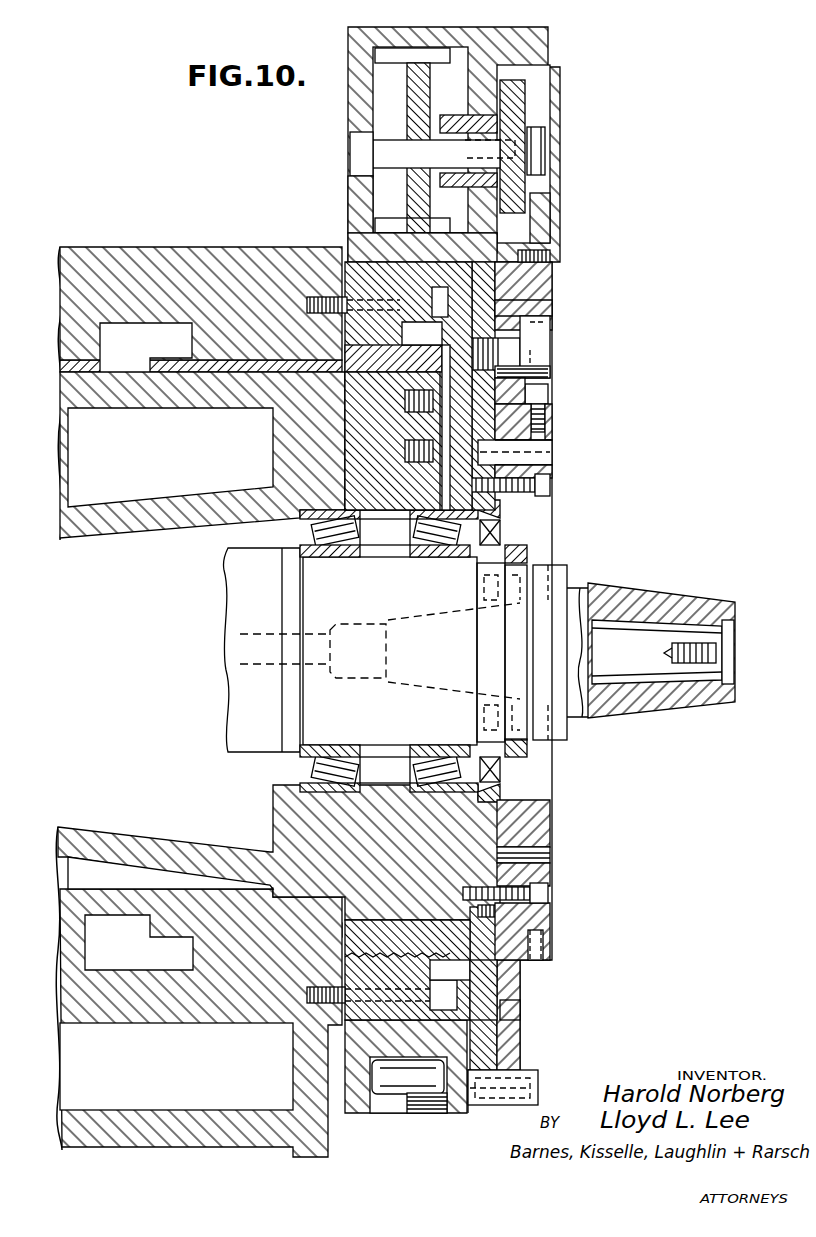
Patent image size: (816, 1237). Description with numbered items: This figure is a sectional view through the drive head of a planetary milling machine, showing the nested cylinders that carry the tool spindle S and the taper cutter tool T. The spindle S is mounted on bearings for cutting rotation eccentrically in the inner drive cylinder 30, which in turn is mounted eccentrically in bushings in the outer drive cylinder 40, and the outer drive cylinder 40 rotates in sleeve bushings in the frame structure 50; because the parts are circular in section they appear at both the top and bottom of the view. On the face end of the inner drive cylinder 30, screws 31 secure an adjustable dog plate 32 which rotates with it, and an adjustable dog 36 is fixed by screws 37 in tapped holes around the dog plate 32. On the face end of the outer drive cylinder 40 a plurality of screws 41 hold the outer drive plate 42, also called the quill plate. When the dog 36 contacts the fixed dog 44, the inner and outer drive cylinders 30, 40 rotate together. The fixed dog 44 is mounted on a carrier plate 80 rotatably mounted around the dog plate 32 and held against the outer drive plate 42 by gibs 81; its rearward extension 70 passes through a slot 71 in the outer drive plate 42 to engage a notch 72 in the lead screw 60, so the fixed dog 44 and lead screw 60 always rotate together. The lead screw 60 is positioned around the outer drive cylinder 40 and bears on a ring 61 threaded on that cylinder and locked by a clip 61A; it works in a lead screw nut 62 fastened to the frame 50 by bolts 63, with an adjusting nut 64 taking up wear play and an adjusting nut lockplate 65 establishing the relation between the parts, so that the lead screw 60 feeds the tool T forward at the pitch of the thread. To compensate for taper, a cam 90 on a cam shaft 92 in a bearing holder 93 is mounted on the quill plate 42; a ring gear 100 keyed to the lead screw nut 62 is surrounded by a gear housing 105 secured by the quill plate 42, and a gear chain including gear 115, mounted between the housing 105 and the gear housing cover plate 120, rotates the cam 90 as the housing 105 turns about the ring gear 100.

The inner drive cylinder 30 is at (128, 526).
The screws 31 is at (536, 486).
The adjustable dog plate 32 is at (546, 472).
The adjustable dog 36 is at (546, 418).
The screws 37 is at (550, 396).
The outer drive cylinder 40 is at (142, 408).
The screws 41 is at (550, 452).
The outer drive plate 42 is at (540, 254).
The fixed dog 44 is at (546, 352).
The frame structure 50 is at (64, 260).
The lead screw 60 is at (392, 382).
The ring 61 is at (406, 400).
The clip 61A is at (450, 420).
The lead screw nut 62 is at (305, 258).
The bolts 63 is at (450, 306).
The adjusting nut 64 is at (445, 334).
The adjusting nut lockplate 65 is at (476, 980).
The rearward extension 70 is at (515, 340).
The slot 71 is at (548, 370).
The notch 72 is at (520, 306).
The carrier plate 80 is at (518, 274).
The gibs 81 is at (540, 1070).
The cam 90 is at (520, 106).
The cam shaft 92 is at (362, 150).
The bearing holder 93 is at (515, 184).
The ring gear 100 is at (352, 246).
The gear housing 105 is at (412, 40).
The gear 115 is at (410, 78).
The gear housing cover plate 120 is at (360, 186).
The tool spindle S is at (216, 738).
The taper cutter tool T is at (640, 710).